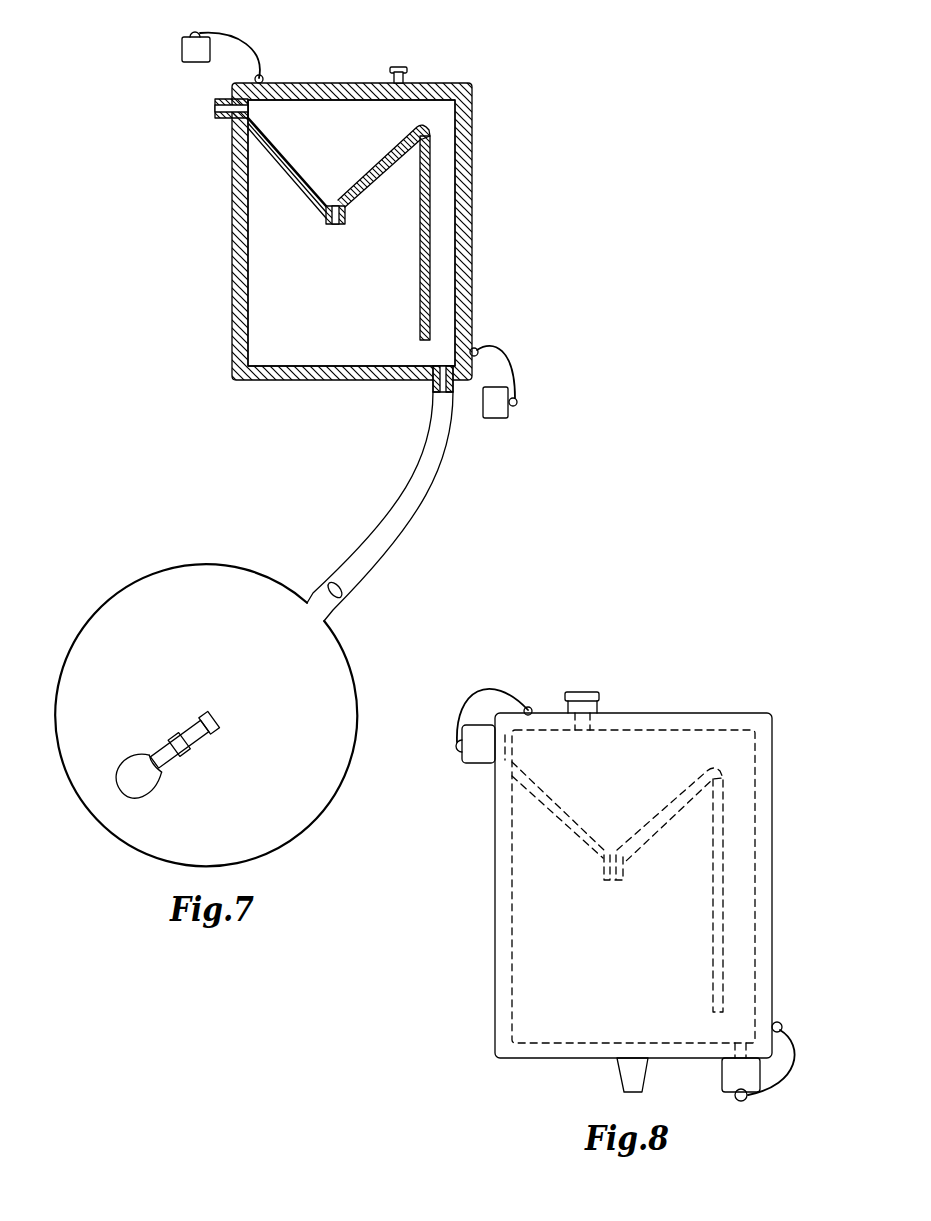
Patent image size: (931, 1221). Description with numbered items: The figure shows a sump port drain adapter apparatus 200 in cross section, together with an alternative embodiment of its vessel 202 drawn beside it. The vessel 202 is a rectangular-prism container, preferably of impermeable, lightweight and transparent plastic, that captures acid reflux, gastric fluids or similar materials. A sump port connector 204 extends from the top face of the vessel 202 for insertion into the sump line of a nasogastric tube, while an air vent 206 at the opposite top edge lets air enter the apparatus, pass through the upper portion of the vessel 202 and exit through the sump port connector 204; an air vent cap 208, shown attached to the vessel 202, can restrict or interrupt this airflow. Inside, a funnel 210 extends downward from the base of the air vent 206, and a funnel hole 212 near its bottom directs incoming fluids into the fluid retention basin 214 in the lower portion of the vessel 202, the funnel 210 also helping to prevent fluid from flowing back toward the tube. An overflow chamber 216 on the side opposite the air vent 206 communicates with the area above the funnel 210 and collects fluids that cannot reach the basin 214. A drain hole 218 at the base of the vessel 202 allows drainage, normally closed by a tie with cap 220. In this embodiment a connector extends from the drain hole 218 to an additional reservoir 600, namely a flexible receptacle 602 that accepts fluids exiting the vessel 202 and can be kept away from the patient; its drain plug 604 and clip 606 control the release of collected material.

In FIG. 7, the sump port drain adapter apparatus 200 is at (150, 90).
In FIG. 7, the vessel 202 is at (342, 82).
In FIG. 8, the vessel 202 is at (773, 742).
In FIG. 8, the sump port connector 204 is at (585, 692).
In FIG. 7, the air vent 206 is at (222, 120).
In FIG. 7, the air vent cap 208 is at (182, 45).
In FIG. 8, the air vent cap 208 is at (482, 748).
In FIG. 7, the funnel 210 is at (282, 171).
In FIG. 8, the funnel 210 is at (540, 802).
In FIG. 7, the funnel hole 212 is at (328, 221).
In FIG. 8, the funnel hole 212 is at (605, 880).
In FIG. 7, the fluid retention basin 214 is at (312, 338).
In FIG. 8, the fluid retention basin 214 is at (585, 960).
In FIG. 7, the overflow chamber 216 is at (442, 257).
In FIG. 8, the overflow chamber 216 is at (742, 913).
In FIG. 7, the drain hole 218 is at (431, 392).
In FIG. 8, the drain hole 218 is at (632, 1075).
In FIG. 7, the tie with cap 220 is at (497, 413).
In FIG. 8, the tie with cap 220 is at (746, 1082).
In FIG. 7, the additional reservoir 600 is at (110, 583).
In FIG. 7, the flexible receptacle 602 is at (87, 630).
In FIG. 7, the drain plug 604 is at (156, 788).
In FIG. 7, the clip 606 is at (208, 716).